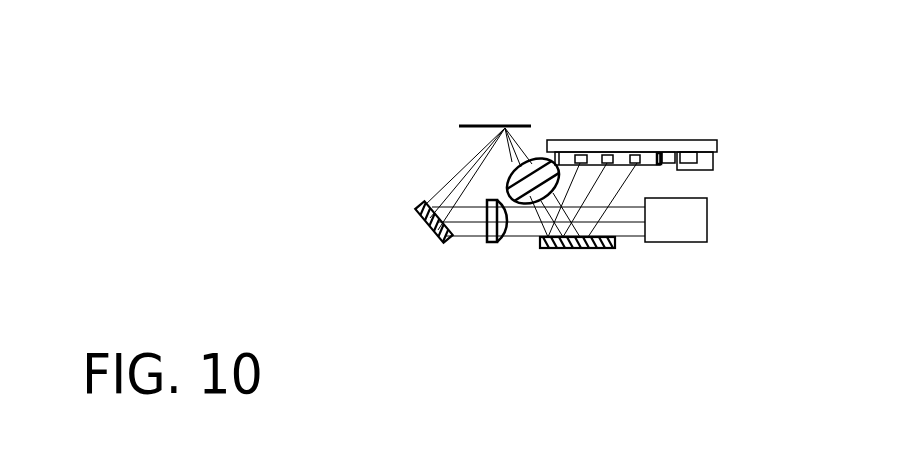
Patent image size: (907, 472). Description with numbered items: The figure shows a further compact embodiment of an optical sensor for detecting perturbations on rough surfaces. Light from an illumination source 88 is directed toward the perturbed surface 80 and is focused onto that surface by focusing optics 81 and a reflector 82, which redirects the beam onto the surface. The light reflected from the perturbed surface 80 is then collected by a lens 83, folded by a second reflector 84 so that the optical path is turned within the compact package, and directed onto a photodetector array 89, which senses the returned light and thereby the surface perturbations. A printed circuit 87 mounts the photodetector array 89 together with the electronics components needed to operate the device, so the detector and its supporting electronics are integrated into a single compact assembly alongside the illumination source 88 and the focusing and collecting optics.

The perturbed surface 80 is at (481, 126).
The focusing optics 81 is at (493, 242).
The reflector 82 is at (422, 216).
The lens 83 is at (536, 158).
The reflector 84 is at (577, 249).
The printed circuit 87 is at (708, 145).
The illumination source 88 is at (704, 229).
The photodetector array 89 is at (654, 152).